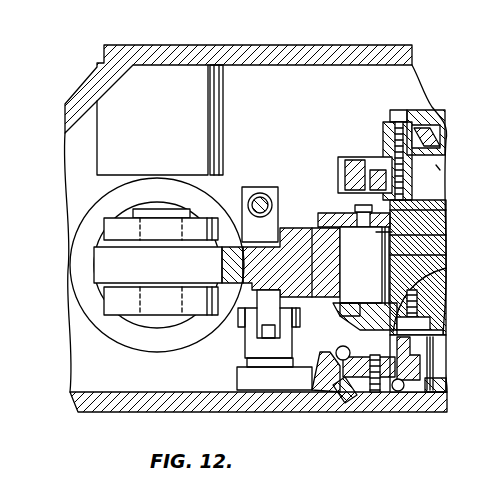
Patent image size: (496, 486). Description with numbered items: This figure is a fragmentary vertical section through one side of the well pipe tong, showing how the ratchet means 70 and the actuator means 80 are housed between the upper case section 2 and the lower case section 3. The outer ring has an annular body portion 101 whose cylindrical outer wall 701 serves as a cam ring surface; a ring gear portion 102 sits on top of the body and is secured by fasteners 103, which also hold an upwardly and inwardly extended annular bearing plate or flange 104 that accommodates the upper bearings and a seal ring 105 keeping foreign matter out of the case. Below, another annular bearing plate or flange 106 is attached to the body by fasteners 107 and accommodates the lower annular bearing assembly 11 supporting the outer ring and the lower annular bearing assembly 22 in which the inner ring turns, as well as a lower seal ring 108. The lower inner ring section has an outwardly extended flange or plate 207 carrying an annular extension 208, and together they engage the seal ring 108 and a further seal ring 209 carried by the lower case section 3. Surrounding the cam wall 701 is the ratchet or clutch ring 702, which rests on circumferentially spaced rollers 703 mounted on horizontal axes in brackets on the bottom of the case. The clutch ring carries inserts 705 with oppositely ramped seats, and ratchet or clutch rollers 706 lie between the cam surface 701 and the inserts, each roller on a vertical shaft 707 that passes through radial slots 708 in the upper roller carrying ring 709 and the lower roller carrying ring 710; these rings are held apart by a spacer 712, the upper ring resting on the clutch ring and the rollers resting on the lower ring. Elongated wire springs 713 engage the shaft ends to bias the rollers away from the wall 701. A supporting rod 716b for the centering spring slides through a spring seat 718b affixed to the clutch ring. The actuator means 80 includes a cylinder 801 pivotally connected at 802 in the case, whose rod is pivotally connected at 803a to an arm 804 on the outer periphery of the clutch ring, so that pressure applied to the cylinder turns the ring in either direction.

The upper case section 2 is at (271, 50).
The lower case section 3 is at (88, 413).
The lower annular bearing assembly 11 is at (334, 368).
The lower annular bearing assembly 22 is at (400, 393).
The ratchet means 70 is at (316, 211).
The actuator means 80 is at (93, 207).
The annular body portion 101 is at (430, 302).
The ring gear portion 102 is at (350, 157).
The fasteners 103 is at (397, 120).
The annular bearing plate or flange 104 is at (432, 110).
The seal ring 105 is at (448, 124).
The annular bearing plate or flange 106 is at (348, 328).
The fasteners 107 is at (432, 323).
The lower seal ring 108 is at (413, 347).
The flange or plate 207 is at (443, 391).
The annular extension 208 is at (387, 411).
The seal ring 209 is at (348, 402).
The cylindrical outer wall 701 is at (405, 255).
The ratchet or clutch ring 702 is at (278, 190).
The rollers 703 is at (273, 315).
The inserts 705 is at (330, 258).
The ratchet or clutch rollers 706 is at (392, 236).
The shafts 707 is at (397, 207).
The radial slots 708 is at (352, 305).
The upper roller carrying ring 709 is at (305, 228).
The lower roller carrying ring 710 is at (440, 284).
The spacer 712 is at (440, 168).
The wire springs 713 is at (433, 212).
The supporting rod 716b is at (243, 187).
The spring seat 718b is at (213, 173).
The cylinder 801 is at (103, 328).
The pivotal connection 802 is at (153, 77).
The pivotal connection 803a is at (152, 212).
The arms 804 is at (100, 273).